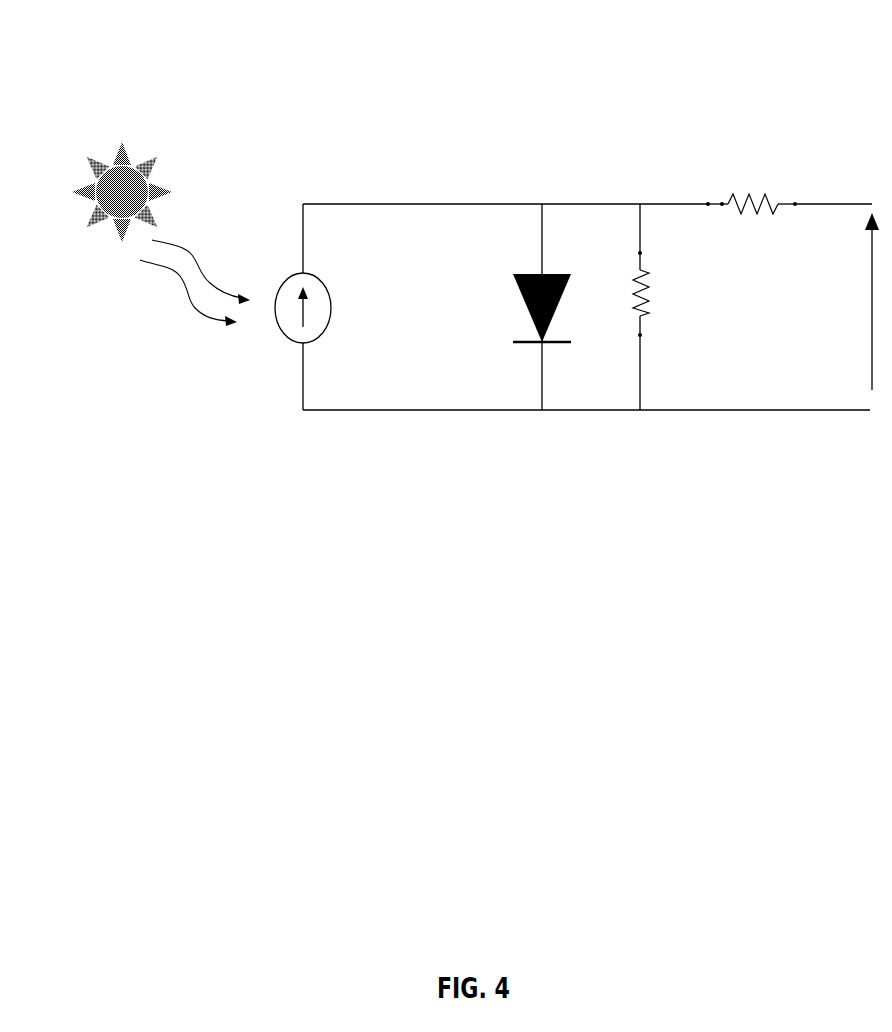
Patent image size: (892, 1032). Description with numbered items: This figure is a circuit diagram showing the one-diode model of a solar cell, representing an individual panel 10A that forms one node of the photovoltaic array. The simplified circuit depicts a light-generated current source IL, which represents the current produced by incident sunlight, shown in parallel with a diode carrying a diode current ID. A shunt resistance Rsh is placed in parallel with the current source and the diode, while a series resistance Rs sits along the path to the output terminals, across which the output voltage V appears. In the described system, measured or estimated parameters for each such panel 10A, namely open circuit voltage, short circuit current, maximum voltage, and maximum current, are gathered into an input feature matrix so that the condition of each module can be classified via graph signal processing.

The individual panel 10A is at (692, 104).
The light-generated current source IL is at (294, 327).
The diode current / diode ID is at (488, 272).
The shunt resistance Rsh is at (653, 307).
The series resistance Rs is at (751, 218).
The output voltage V is at (855, 310).